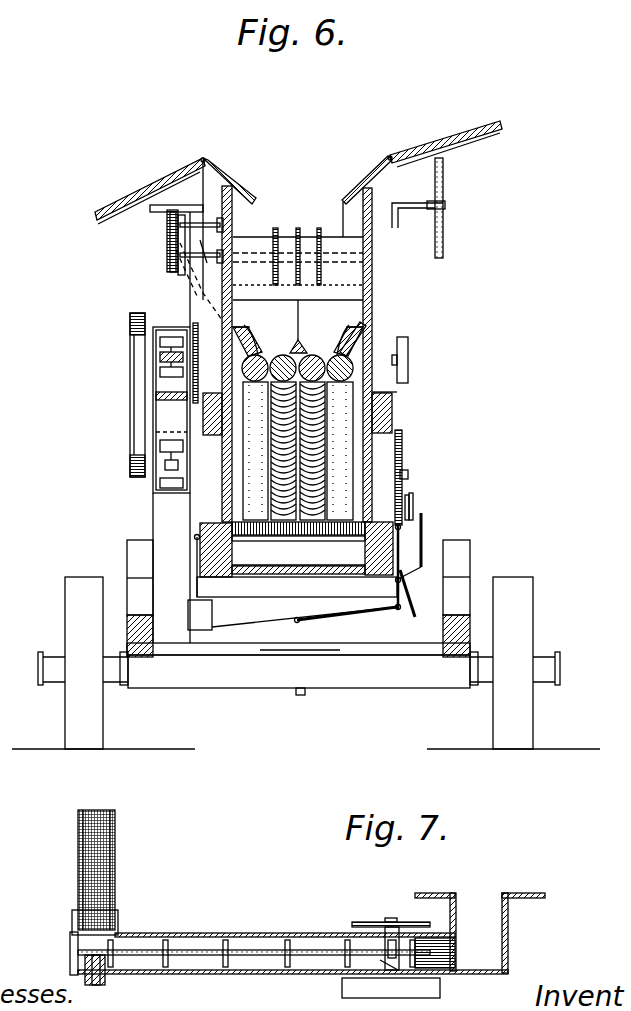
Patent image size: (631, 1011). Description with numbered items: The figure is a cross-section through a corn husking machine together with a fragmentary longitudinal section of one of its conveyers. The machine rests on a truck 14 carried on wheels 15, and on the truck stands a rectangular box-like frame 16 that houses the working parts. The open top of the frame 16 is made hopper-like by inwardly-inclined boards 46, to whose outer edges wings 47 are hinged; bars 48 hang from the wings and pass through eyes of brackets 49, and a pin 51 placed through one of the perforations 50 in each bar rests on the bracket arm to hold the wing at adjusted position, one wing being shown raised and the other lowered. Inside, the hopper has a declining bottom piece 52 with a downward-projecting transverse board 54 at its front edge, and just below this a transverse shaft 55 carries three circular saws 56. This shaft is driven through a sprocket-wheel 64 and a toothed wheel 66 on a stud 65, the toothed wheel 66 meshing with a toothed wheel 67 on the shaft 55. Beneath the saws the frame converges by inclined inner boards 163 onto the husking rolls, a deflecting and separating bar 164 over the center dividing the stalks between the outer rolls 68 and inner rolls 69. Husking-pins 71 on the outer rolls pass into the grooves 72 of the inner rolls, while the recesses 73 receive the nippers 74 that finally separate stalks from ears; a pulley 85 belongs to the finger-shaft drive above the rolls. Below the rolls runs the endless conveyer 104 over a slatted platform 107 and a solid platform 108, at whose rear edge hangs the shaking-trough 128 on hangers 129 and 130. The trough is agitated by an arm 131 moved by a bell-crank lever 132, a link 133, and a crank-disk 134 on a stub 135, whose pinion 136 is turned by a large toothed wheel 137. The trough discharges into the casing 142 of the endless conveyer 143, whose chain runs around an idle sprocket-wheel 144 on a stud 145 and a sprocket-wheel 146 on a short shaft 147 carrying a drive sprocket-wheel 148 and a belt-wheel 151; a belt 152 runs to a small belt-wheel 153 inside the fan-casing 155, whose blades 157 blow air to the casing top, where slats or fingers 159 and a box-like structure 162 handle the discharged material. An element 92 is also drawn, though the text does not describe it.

In FIG. 6, the truck 14 is at (247, 689).
In FIG. 6, the wheels 15 is at (67, 712).
In FIG. 6, the frame 16 is at (372, 310).
In FIG. 6, the inwardly-inclined boards 46 is at (228, 185).
In FIG. 6, the wings 47 is at (158, 190).
In FIG. 6, the bars 48 is at (444, 168).
In FIG. 6, the bracket 49 is at (416, 210).
In FIG. 6, the perforations 50 is at (444, 227).
In FIG. 6, the pin 51 is at (445, 203).
In FIG. 6, the bottom piece 52 is at (314, 212).
In FIG. 6, the transverse board 54 is at (268, 300).
In FIG. 6, the transverse shaft 55 is at (205, 256).
In FIG. 6, the saws 56 is at (272, 266).
In FIG. 6, the sprocket-wheel 64 is at (186, 233).
In FIG. 6, the stud 65 is at (198, 228).
In FIG. 6, the toothed wheel 66 is at (168, 238).
In FIG. 6, the toothed wheel 67 is at (168, 268).
In FIG. 6, the outer rolls 68 is at (250, 445).
In FIG. 6, the inner rolls 69 is at (278, 482).
In FIG. 6, the husking-pins 71 is at (248, 393).
In FIG. 6, the elongated grooves or recesses 72 is at (246, 506).
In FIG. 6, the elongated recesses 73 is at (283, 354).
In FIG. 6, the nippers 74 is at (294, 333).
In FIG. 6, the pulley 85 is at (410, 349).
In FIG. 6, the belt 92 is at (182, 278).
In FIG. 6, the endless conveyer 104 is at (259, 536).
In FIG. 6, the slatted platform 107 is at (301, 540).
In FIG. 6, the solid platform 108 is at (276, 575).
In FIG. 6, the shaking-trough 128 is at (240, 618).
In FIG. 7, the shaking-trough 128 is at (115, 861).
In FIG. 6, the pivoted hanger 129 is at (195, 572).
In FIG. 6, the pivoted hanger 130 is at (403, 540).
In FIG. 6, the arm 131 is at (340, 618).
In FIG. 6, the bell-crank lever 132 is at (410, 591).
In FIG. 6, the link 133 is at (425, 545).
In FIG. 6, the crank-disk 134 is at (414, 501).
In FIG. 6, the stub 135 is at (410, 497).
In FIG. 6, the pinion 136 is at (408, 492).
In FIG. 6, the large toothed wheel 137 is at (403, 438).
In FIG. 6, the casing 142 is at (155, 548).
In FIG. 7, the casing 142 is at (200, 933).
In FIG. 6, the endless conveyer 143 is at (170, 340).
In FIG. 7, the endless conveyer 143 is at (203, 960).
In FIG. 7, the idle sprocket-wheel 144 is at (70, 943).
In FIG. 7, the stud 145 is at (100, 985).
In FIG. 7, the sprocket-wheel 146 is at (383, 958).
In FIG. 6, the short shaft 147 is at (160, 380).
In FIG. 7, the short shaft 147 is at (385, 938).
In FIG. 6, the sprocket-wheel 148 is at (198, 346).
In FIG. 7, the sprocket-wheel 148 is at (366, 921).
In FIG. 6, the belt-wheel 151 is at (131, 339).
In FIG. 7, the belt-wheel 151 is at (440, 994).
In FIG. 6, the endless belt 152 is at (138, 370).
In FIG. 6, the small belt-wheel 153 is at (132, 470).
In FIG. 6, the fan-casing 155 is at (163, 500).
In FIG. 6, the blades or wings 157 is at (158, 494).
In FIG. 7, the slats or fingers 159 is at (448, 946).
In FIG. 7, the box-like structure 162 is at (510, 920).
In FIG. 6, the inclined inner boards 163 is at (366, 322).
In FIG. 6, the deflecting and separating bar 164 is at (296, 335).